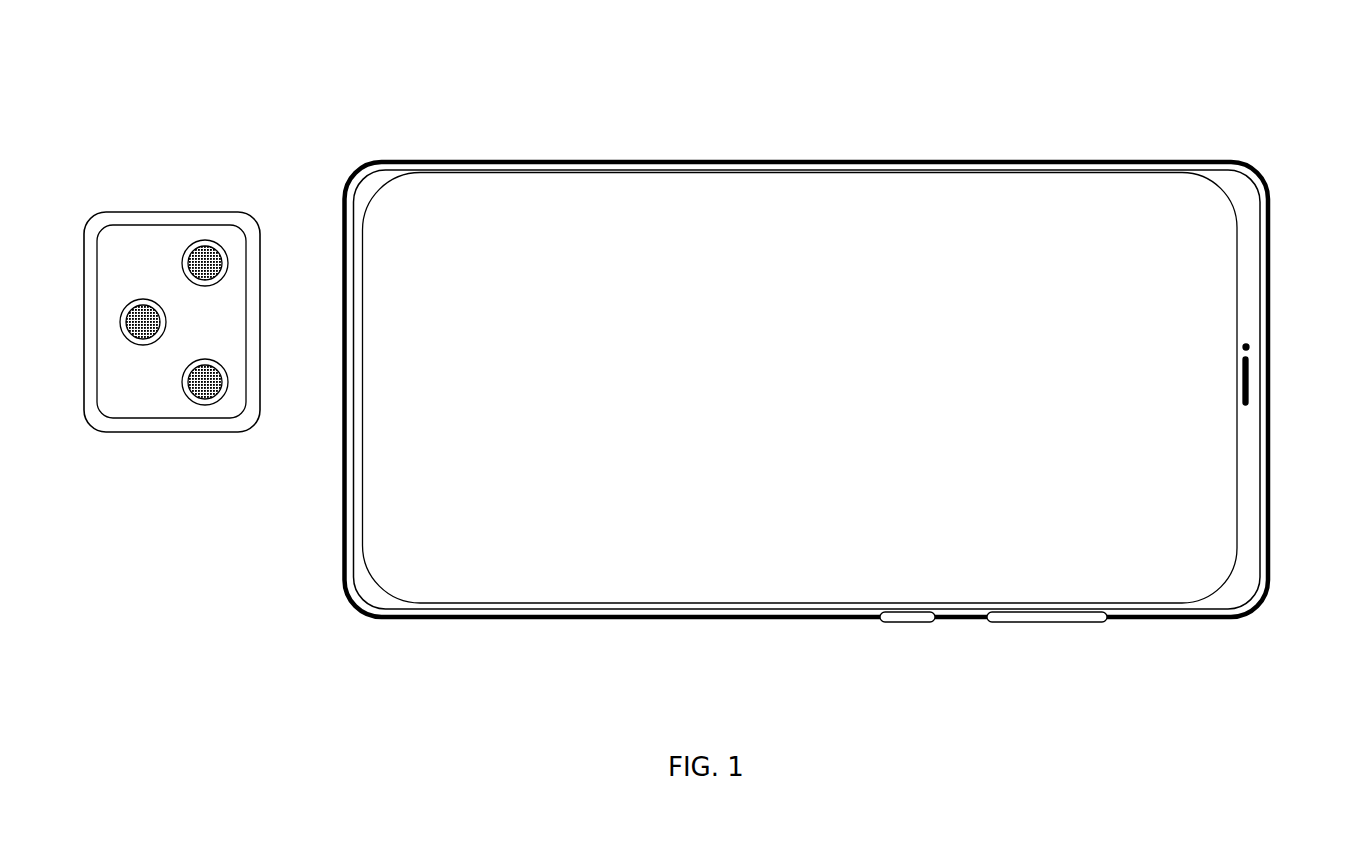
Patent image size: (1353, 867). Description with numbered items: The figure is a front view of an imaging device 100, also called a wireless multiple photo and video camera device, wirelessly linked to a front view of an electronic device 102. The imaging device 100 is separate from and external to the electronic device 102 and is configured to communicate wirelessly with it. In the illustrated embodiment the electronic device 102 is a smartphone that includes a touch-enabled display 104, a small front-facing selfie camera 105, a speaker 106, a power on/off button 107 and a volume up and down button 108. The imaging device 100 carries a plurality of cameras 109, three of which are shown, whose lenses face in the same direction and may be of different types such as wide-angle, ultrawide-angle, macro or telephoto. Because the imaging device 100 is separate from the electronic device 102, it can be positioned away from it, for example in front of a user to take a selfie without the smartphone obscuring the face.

The imaging device 100 is at (137, 211).
The electronic device 102 is at (370, 148).
The touch-enabled display 104 is at (519, 364).
The front-facing camera 105 is at (1254, 324).
The speaker 106 is at (1258, 368).
The power on/off button 107 is at (881, 626).
The volume up and down button 108 is at (1021, 628).
The cameras 109 is at (206, 385).